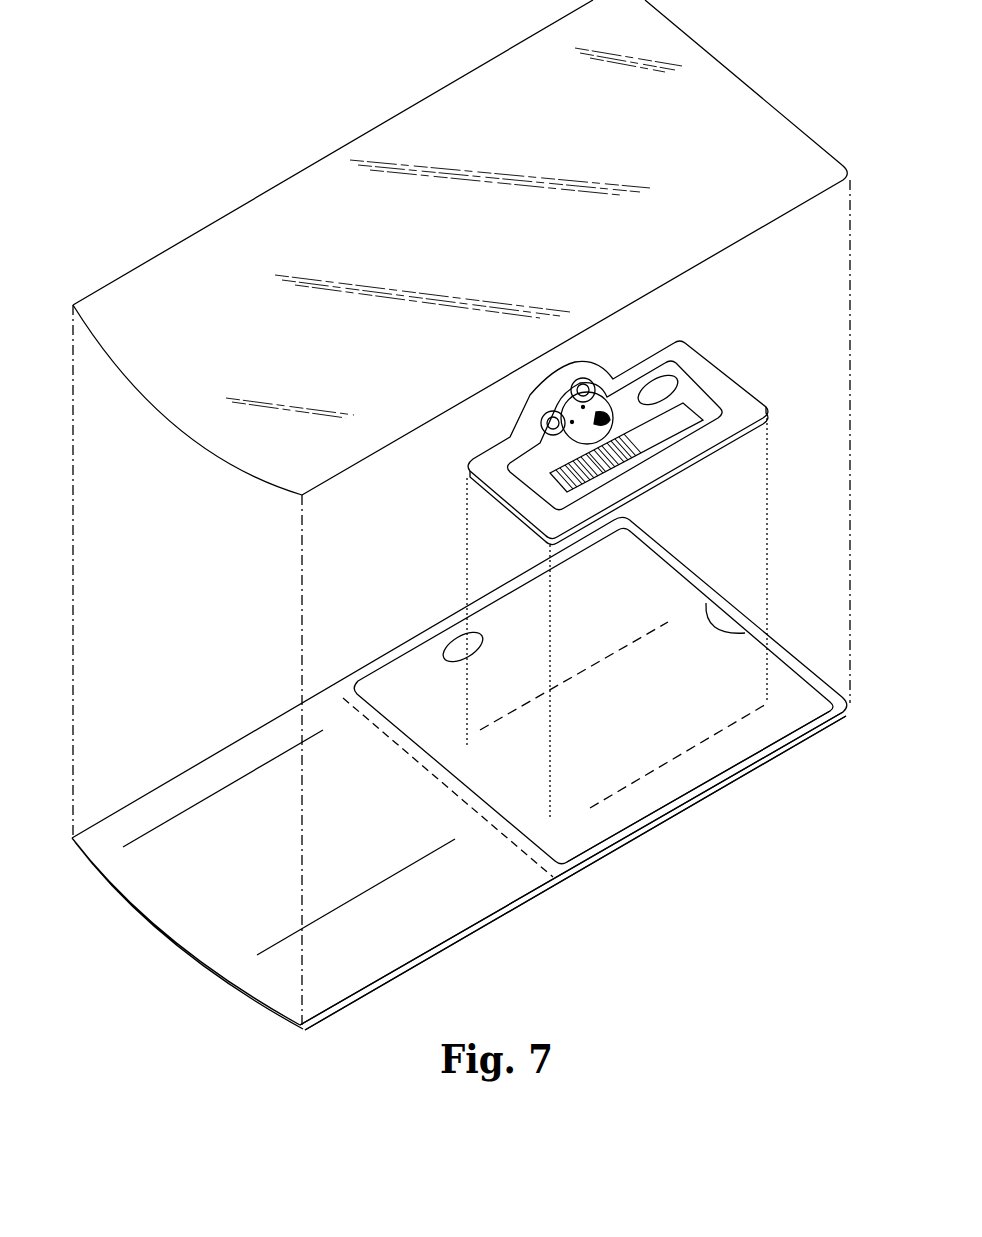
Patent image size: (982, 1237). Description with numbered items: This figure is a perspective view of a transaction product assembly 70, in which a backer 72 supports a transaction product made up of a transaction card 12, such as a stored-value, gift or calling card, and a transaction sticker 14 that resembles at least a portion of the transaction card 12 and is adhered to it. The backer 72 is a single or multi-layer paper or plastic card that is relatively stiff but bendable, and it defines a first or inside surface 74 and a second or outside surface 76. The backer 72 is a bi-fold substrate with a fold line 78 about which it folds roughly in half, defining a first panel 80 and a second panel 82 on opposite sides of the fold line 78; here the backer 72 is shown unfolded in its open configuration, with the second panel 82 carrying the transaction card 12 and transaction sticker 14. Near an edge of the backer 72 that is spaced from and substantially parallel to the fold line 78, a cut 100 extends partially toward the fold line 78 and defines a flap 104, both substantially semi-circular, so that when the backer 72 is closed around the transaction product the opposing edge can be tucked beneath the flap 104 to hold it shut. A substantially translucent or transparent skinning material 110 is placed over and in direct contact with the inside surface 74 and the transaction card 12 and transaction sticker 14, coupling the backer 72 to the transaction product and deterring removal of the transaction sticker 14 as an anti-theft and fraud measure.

The transaction product assembly 70 is at (243, 100).
The skinning material 110 is at (223, 457).
The transaction card 12 is at (705, 360).
The transaction sticker 14 is at (709, 404).
The cut 100 is at (722, 612).
The flap 104 is at (727, 613).
The fold line 78 is at (347, 697).
The first panel 80 is at (235, 757).
The backer 72 is at (177, 798).
The second panel 82 is at (747, 743).
The outside surface 76 is at (667, 820).
The inside surface 74 is at (420, 932).